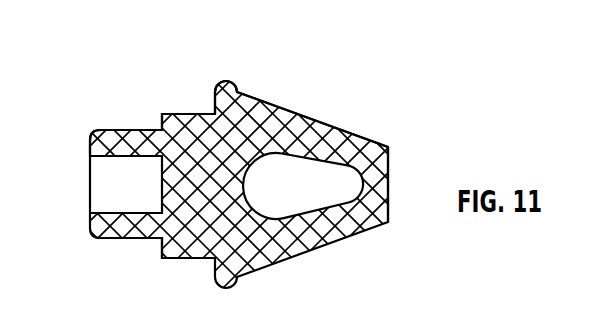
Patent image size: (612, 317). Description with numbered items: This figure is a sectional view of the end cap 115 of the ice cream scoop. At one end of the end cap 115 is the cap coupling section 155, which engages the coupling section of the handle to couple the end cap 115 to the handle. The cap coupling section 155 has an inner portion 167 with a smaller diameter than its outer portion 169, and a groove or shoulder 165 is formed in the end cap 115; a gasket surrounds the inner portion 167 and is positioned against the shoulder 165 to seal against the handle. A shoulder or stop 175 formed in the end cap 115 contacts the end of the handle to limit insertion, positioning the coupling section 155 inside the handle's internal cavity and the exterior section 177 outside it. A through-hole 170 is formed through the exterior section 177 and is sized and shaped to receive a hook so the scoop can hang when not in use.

The cap coupling section 155 is at (129, 61).
The end cap 115 is at (382, 79).
The shoulder 165 is at (160, 248).
The inner portion 167 is at (103, 137).
The outer portion 169 is at (178, 113).
The through-hole 170 is at (313, 166).
The stop 175 is at (213, 96).
The exterior section 177 is at (329, 123).